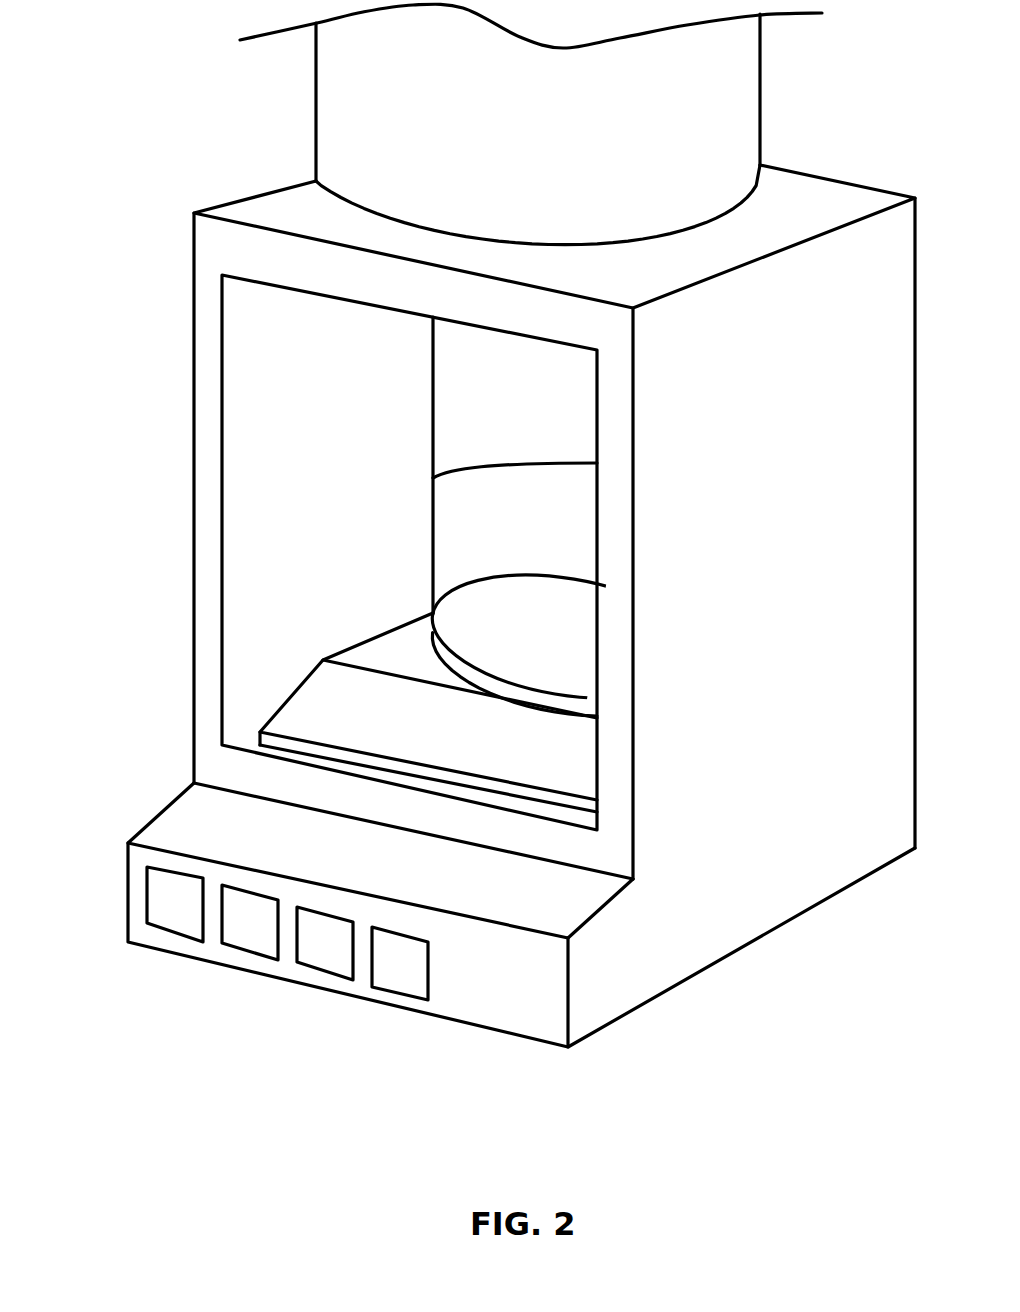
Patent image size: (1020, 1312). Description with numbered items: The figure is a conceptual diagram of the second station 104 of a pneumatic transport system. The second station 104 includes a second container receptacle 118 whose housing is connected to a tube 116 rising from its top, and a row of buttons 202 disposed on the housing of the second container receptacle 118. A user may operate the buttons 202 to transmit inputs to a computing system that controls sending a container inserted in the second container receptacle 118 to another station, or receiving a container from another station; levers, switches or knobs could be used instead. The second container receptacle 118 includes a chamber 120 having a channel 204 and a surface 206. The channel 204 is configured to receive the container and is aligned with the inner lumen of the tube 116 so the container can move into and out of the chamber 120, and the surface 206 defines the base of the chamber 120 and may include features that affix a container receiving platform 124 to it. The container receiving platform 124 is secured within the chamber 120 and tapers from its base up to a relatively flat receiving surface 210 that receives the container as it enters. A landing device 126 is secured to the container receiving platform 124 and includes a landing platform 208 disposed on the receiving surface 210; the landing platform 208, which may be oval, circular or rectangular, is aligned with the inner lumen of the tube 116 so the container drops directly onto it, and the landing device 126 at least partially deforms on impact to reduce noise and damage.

The second station 104 is at (140, 114).
The tube 116 is at (757, 70).
The second container receptacle 118 is at (193, 303).
The chamber 120 is at (307, 378).
The channel 204 is at (440, 410).
The landing platform 208 is at (468, 602).
The receiving surface 210 is at (420, 630).
The landing device 126 is at (443, 650).
The container receiving platform 124 is at (296, 688).
The surface 206 is at (245, 743).
The buttons 202 is at (287, 960).